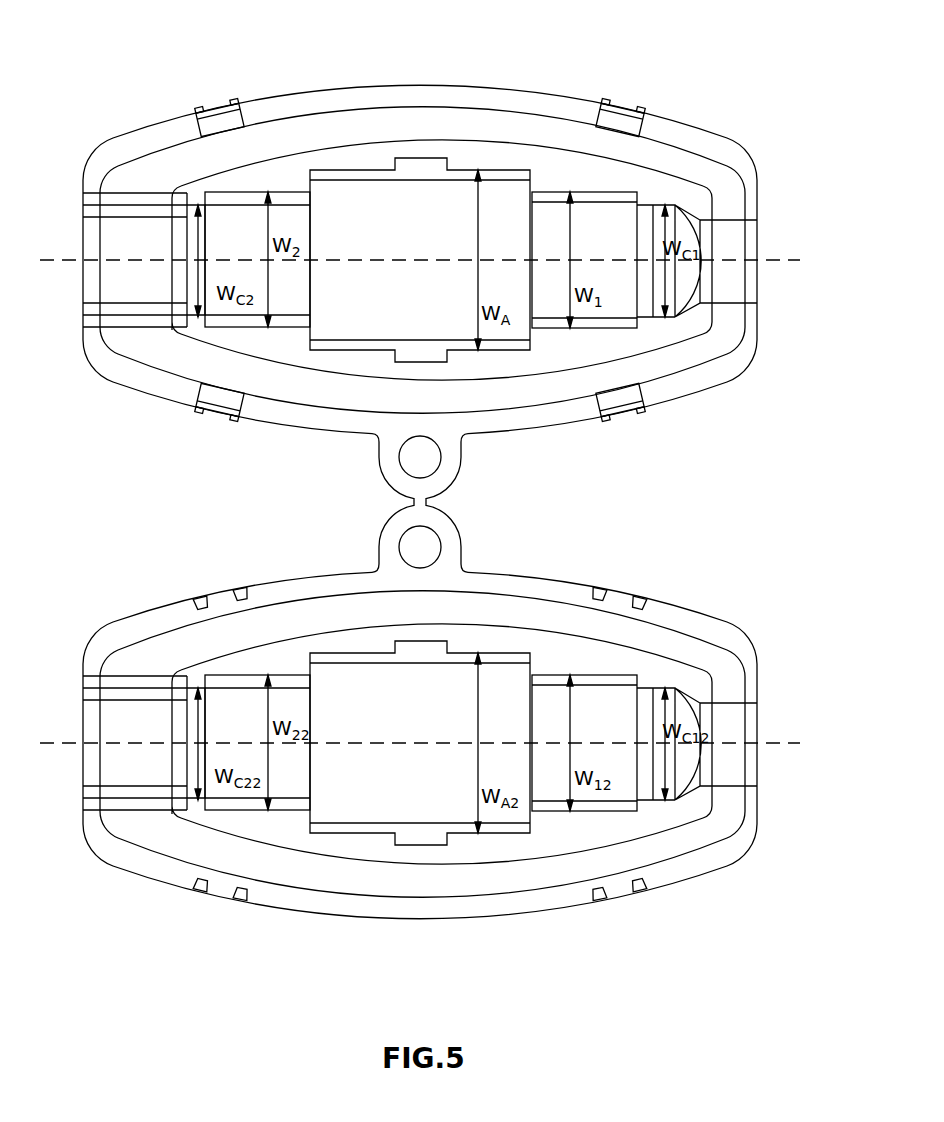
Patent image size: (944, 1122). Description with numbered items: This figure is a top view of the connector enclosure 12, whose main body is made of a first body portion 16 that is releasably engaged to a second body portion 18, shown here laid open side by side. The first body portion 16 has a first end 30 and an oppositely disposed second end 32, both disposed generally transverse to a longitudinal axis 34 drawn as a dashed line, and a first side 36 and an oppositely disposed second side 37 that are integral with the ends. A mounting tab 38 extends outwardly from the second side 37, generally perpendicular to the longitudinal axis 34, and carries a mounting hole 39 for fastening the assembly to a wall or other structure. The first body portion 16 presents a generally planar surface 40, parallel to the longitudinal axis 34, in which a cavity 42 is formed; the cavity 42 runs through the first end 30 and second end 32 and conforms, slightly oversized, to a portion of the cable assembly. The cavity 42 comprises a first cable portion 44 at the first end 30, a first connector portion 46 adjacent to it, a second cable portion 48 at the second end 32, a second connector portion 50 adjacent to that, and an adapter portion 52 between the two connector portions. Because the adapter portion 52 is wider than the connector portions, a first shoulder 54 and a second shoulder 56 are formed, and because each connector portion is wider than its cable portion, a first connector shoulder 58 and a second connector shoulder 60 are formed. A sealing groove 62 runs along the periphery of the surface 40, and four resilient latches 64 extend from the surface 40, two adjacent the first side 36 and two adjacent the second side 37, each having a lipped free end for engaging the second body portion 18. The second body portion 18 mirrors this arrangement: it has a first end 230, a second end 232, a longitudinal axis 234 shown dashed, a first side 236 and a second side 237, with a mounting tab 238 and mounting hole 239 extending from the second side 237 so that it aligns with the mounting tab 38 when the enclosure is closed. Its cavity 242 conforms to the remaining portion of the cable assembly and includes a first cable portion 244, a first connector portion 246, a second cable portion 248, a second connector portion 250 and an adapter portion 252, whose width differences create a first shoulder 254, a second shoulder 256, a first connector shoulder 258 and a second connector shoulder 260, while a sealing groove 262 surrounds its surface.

The connector enclosure 12 is at (223, 45).
The first body portion 16 is at (483, 82).
The second body portion 18 is at (535, 924).
The first end 30 is at (760, 212).
The second end 32 is at (92, 330).
The longitudinal axis 34 is at (72, 262).
The first side 36 is at (437, 84).
The second side 37 is at (528, 427).
The mounting tab 38 is at (465, 456).
The mounting hole 39 is at (410, 463).
The surface 40 is at (292, 181).
The cavity 42 is at (352, 195).
The first cable portion 44 is at (727, 286).
The first connector portion 46 is at (588, 216).
The second cable portion 48 is at (152, 292).
The second connector portion 50 is at (282, 283).
The adapter portion 52 is at (336, 378).
The first shoulder 54 is at (522, 182).
The second shoulder 56 is at (316, 336).
The first connector shoulder 58 is at (633, 203).
The second connector shoulder 60 is at (212, 196).
The sealing groove 62 is at (398, 122).
The resilient latches 64 is at (213, 108).
The first end 230 is at (760, 725).
The second end 232 is at (84, 814).
The longitudinal axis 234 is at (376, 738).
The first side 236 is at (310, 908).
The second side 237 is at (528, 578).
The mounting tab 238 is at (463, 548).
The mounting hole 239 is at (432, 545).
The cavity 242 is at (390, 810).
The first cable portion 244 is at (735, 771).
The first connector portion 246 is at (585, 702).
The second cable portion 248 is at (152, 775).
The second connector portion 250 is at (282, 762).
The adapter portion 252 is at (455, 812).
The first shoulder 254 is at (522, 665).
The second shoulder 256 is at (316, 818).
The first connector shoulder 258 is at (633, 688).
The second connector shoulder 260 is at (210, 680).
The sealing groove 262 is at (288, 620).